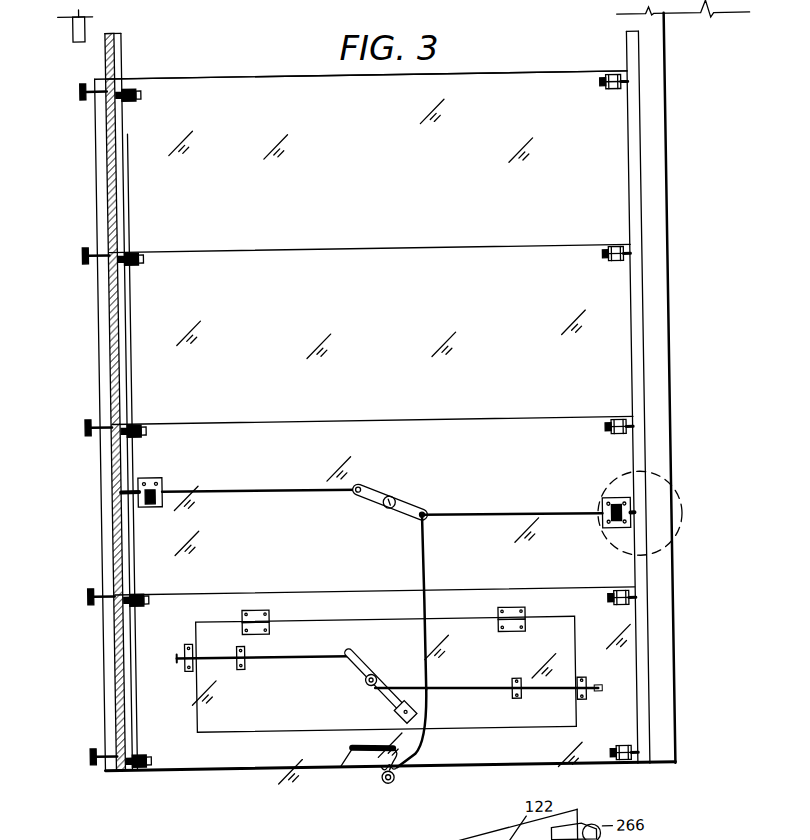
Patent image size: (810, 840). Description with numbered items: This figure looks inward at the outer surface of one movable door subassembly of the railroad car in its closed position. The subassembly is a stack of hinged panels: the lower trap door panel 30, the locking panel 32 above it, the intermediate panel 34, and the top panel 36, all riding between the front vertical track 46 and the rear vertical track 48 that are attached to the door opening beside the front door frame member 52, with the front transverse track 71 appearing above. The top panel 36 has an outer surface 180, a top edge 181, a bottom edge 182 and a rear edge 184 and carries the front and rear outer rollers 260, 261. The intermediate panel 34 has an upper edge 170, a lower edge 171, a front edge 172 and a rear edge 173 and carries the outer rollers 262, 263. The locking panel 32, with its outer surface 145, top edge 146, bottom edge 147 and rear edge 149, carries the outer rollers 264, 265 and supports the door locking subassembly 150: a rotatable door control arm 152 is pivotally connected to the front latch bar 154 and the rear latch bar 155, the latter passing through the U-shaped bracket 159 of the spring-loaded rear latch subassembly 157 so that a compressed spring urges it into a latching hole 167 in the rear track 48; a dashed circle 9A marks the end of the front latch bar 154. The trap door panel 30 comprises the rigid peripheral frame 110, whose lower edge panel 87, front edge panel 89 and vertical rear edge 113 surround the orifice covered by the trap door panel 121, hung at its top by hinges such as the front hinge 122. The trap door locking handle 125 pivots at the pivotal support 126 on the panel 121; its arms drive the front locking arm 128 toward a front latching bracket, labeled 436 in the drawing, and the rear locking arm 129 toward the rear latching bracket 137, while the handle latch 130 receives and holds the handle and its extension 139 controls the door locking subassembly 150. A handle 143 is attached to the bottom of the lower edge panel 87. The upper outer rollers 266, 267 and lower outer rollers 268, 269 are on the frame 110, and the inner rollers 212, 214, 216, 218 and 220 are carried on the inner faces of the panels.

The trap door panel 30 is at (100, 707).
The locking panel 32 is at (102, 527).
The intermediate panel 34 is at (104, 350).
The top panel 36 is at (99, 158).
The front right hand vertical track 46 is at (632, 57).
The rear right hand vertical track 48 is at (128, 58).
The front door frame member 52 is at (671, 118).
The front transverse track 71 is at (79, 25).
The lower edge panel 87 is at (276, 756).
The front edge panel 89 is at (411, 704).
The detail circle 9A is at (681, 504).
The peripheral frame 110 is at (622, 720).
The vertical rear edge 113 is at (99, 664).
The trap door panel 121 is at (386, 674).
The hinge 122 is at (522, 630).
The trap door panel locking handle 125 is at (365, 665).
The pivotal support 126 is at (364, 685).
The front trap door locking arm 128 is at (495, 686).
The rear trap door locking arm 129 is at (318, 653).
The handle latch 130 is at (412, 712).
The rear trap door panel latch 137 is at (185, 669).
The extension 139 is at (426, 730).
The handle 143 is at (340, 775).
The outer surface 145 is at (441, 474).
The top edge 146 is at (348, 423).
The bottom edge 147 is at (480, 590).
The rear edge 149 is at (104, 562).
The door locking subassembly 150 is at (464, 519).
The door control arm 152 is at (424, 503).
The front latch bar 154 is at (565, 513).
The rear latch bar 155 is at (289, 487).
The rear latch bar support and spring loading subassembly 157 is at (162, 484).
The U-shaped bracket 159 is at (419, 541).
The latching hole 167 is at (120, 488).
The upper edge 170 is at (381, 334).
The lower edge 171 is at (505, 250).
The front edge 172 is at (572, 419).
The rear edge 173 is at (99, 370).
The outer surface 180 is at (350, 138).
The top edge 181 is at (566, 75).
The bottom edge 182 is at (585, 247).
The rear edge 184 is at (99, 190).
The inner roller 212 is at (85, 89).
The inner roller 214 is at (82, 252).
The inner roller 216 is at (84, 427).
The interior roller 218 is at (85, 592).
The interior roller 220 is at (88, 758).
The front outer roller 260 is at (608, 92).
The rear outer roller 261 is at (141, 96).
The front outer roller 262 is at (614, 264).
The rear outer roller 263 is at (142, 262).
The front outer roller 264 is at (608, 435).
The rear outer roller 265 is at (122, 432).
The upper front outer roller 266 is at (614, 595).
The upper rear outer roller 267 is at (142, 604).
The lower front outer roller 268 is at (613, 765).
The lower rear outer roller 269 is at (135, 768).
The rod end bracket 436 is at (579, 700).